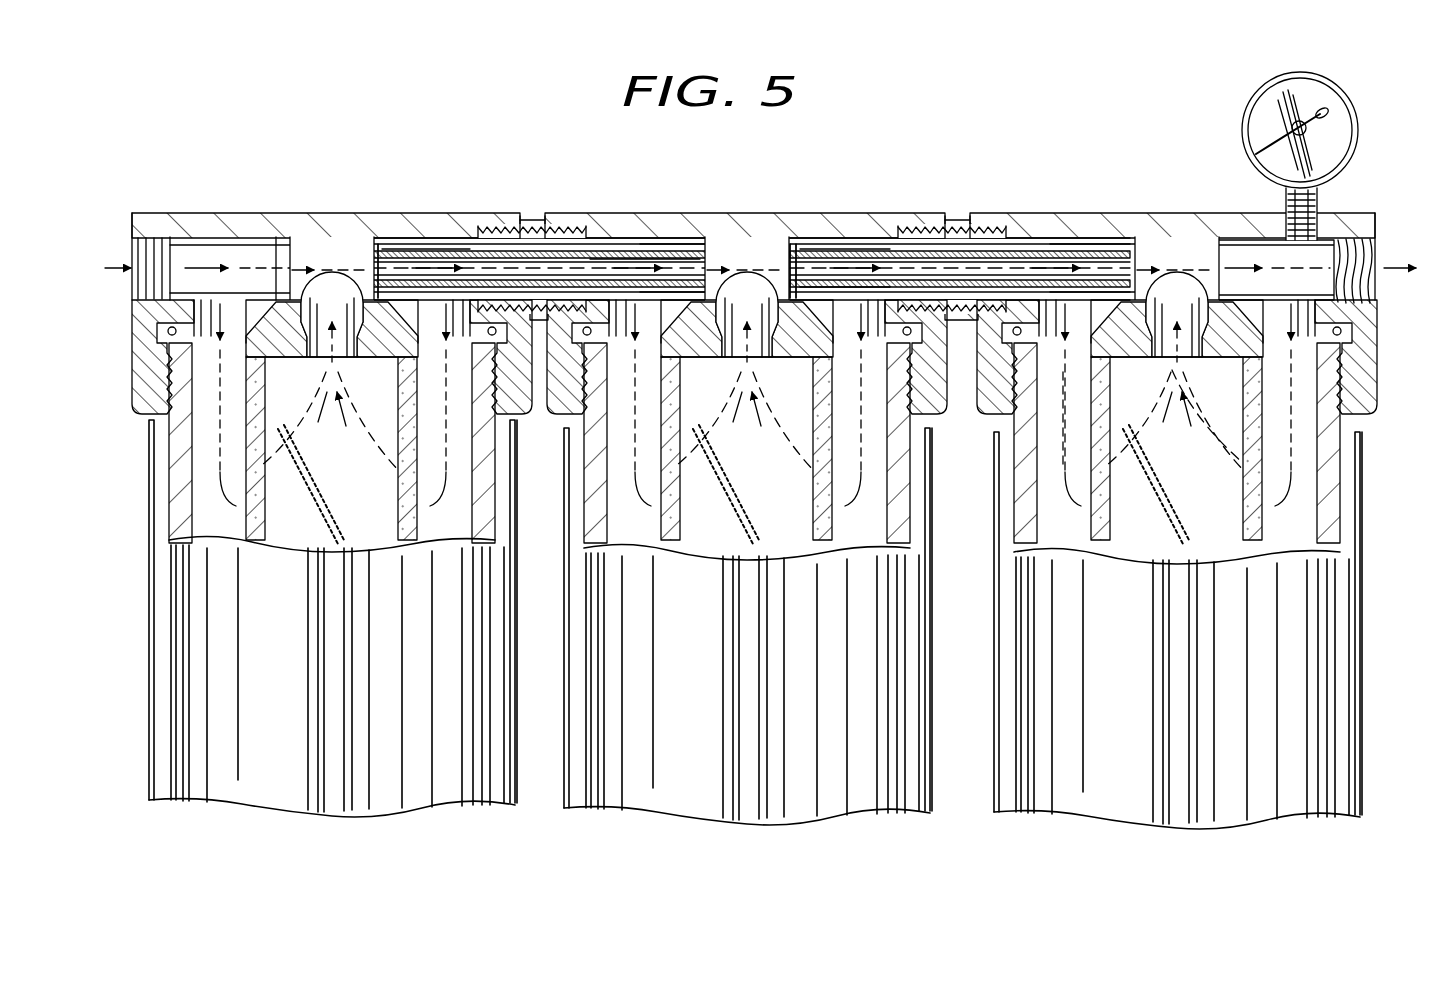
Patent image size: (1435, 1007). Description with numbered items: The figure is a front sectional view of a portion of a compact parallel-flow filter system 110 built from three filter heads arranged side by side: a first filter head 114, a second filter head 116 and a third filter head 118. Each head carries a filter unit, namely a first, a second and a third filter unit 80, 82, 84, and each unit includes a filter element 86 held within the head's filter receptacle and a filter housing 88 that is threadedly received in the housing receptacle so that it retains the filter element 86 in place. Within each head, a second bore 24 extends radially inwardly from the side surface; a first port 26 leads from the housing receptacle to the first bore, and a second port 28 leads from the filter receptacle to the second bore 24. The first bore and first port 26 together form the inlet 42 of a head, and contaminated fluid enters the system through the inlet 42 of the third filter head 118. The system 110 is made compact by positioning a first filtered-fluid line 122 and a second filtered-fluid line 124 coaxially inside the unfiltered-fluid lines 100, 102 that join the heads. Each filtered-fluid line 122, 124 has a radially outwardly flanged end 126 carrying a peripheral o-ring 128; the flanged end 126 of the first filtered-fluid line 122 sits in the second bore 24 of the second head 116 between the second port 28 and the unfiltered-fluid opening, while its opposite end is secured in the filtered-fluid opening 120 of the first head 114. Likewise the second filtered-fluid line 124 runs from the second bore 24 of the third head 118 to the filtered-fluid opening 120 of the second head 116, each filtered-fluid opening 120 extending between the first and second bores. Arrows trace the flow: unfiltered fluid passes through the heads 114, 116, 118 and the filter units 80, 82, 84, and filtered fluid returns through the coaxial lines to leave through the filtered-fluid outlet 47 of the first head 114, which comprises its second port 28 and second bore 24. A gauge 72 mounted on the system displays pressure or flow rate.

The second bore 24 is at (463, 236).
The first port 26 is at (1064, 345).
The second port 28 is at (1165, 352).
The inlet 42 is at (237, 242).
The filtered-fluid outlet 47 is at (1328, 287).
The gauge 72 is at (1251, 100).
The first filter unit 80 is at (175, 575).
The second filter unit 82 is at (596, 640).
The third filter unit 84 is at (1005, 650).
The filter element 86 is at (442, 491).
The filter housing 88 is at (490, 495).
The unfiltered-fluid line 100 is at (951, 238).
The unfiltered-fluid line 102 is at (536, 236).
The filter system 110 is at (760, 444).
The first filter head 114 is at (1010, 212).
The second filter head 116 is at (568, 214).
The third filter head 118 is at (187, 211).
The filtered-fluid opening 120 is at (699, 244).
The first filtered-fluid line 122 is at (866, 238).
The second filtered-fluid line 124 is at (611, 244).
The radially outwardly flanged end 126 is at (374, 240).
The peripheral o-ring 128 is at (388, 242).